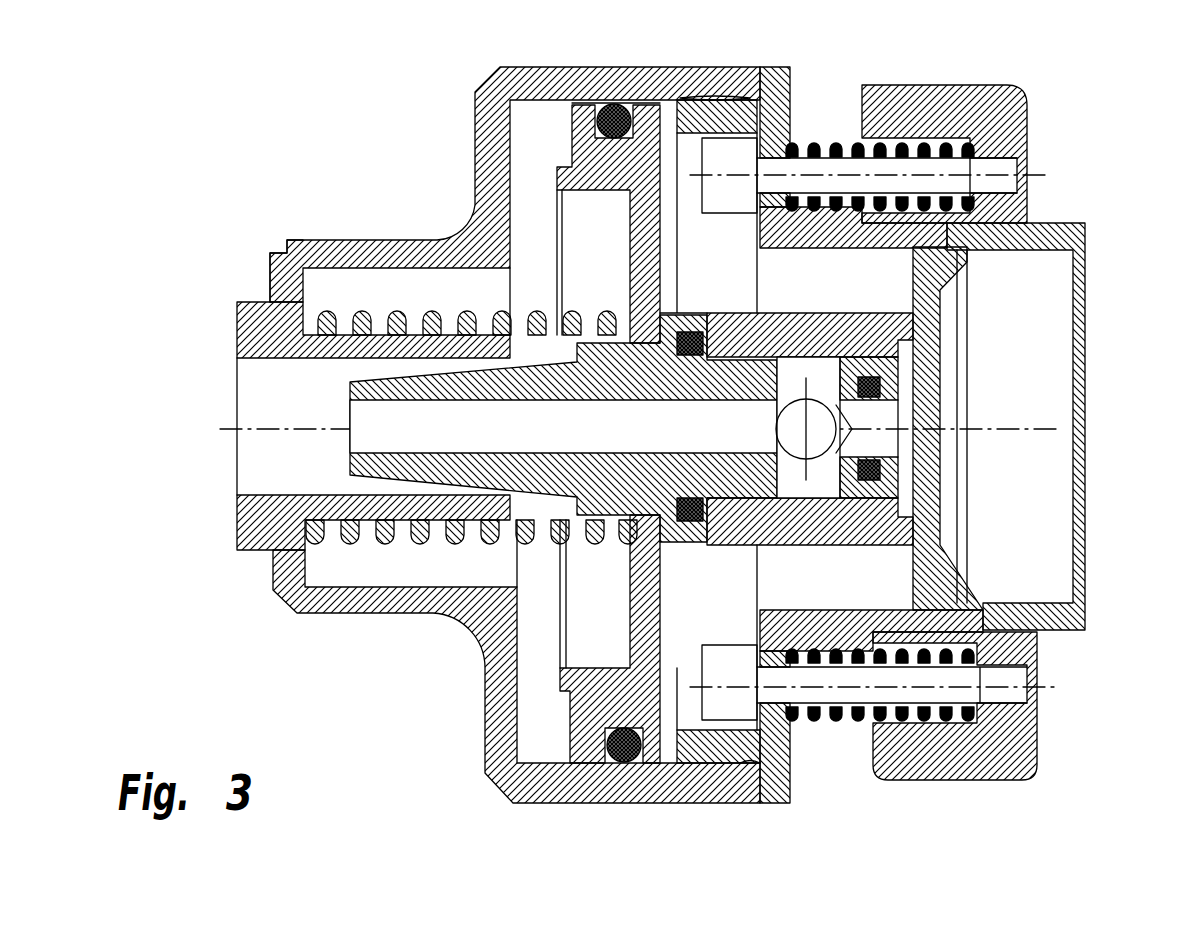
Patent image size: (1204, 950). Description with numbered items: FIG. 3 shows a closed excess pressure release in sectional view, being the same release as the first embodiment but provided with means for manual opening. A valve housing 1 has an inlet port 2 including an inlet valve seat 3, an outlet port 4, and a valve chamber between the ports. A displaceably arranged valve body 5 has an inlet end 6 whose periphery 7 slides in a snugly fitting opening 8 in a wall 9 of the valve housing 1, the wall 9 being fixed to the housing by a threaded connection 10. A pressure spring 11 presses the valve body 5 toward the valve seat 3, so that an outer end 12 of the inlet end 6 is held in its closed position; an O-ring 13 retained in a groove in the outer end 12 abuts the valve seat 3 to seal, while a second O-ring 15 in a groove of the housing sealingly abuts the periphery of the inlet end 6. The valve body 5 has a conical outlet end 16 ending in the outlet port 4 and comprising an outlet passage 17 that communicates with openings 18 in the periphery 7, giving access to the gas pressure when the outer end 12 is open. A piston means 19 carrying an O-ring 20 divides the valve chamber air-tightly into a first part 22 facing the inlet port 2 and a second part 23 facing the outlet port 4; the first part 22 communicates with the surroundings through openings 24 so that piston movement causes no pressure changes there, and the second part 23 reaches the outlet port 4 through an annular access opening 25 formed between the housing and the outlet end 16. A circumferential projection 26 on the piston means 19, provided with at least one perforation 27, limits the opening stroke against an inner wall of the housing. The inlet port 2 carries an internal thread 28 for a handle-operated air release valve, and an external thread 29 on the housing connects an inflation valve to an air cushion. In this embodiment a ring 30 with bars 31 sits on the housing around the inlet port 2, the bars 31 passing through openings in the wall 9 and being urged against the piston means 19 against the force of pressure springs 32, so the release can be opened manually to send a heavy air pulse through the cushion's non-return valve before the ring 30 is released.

The valve housing 1 is at (490, 177).
The inlet port 2 is at (1047, 318).
The inlet valve seat 3 is at (887, 383).
The outlet port 4 is at (245, 372).
The valve body 5 is at (480, 643).
The inlet end 6 is at (950, 292).
The periphery 7 is at (830, 440).
The opening 8 is at (747, 487).
The wall 9 is at (790, 118).
The threaded connection 10 is at (722, 99).
The pressure spring 11 is at (393, 322).
The outer end 12 is at (840, 410).
The O-ring 13 is at (885, 476).
The second O-ring 15 is at (757, 358).
The outlet end 16 is at (353, 463).
The outlet passage 17 is at (353, 413).
The openings 18 is at (975, 580).
The piston means 19 is at (578, 100).
The O-ring 20 is at (633, 102).
The first part of the valve chamber 22 is at (565, 222).
The second part of the valve chamber 23 is at (555, 110).
The openings 24 is at (787, 140).
The annular access opening 25 is at (273, 580).
The circumferential projection 26 is at (560, 688).
The perforation 27 is at (557, 167).
The internal thread 28 is at (1033, 608).
The external thread 29 is at (306, 243).
The ring 30 is at (1028, 105).
The bars 31 is at (797, 690).
The pressure springs 32 is at (835, 713).